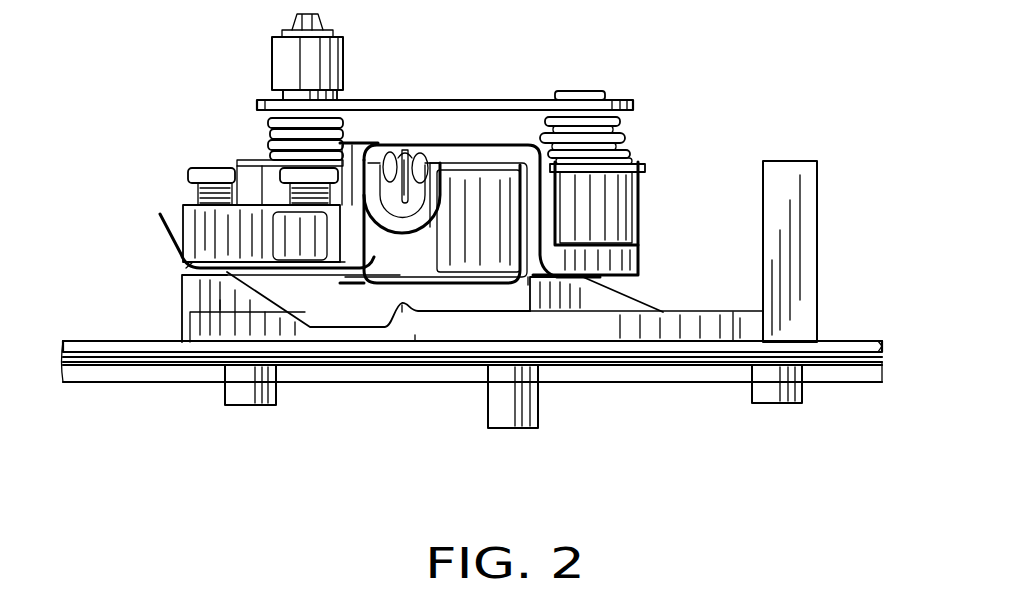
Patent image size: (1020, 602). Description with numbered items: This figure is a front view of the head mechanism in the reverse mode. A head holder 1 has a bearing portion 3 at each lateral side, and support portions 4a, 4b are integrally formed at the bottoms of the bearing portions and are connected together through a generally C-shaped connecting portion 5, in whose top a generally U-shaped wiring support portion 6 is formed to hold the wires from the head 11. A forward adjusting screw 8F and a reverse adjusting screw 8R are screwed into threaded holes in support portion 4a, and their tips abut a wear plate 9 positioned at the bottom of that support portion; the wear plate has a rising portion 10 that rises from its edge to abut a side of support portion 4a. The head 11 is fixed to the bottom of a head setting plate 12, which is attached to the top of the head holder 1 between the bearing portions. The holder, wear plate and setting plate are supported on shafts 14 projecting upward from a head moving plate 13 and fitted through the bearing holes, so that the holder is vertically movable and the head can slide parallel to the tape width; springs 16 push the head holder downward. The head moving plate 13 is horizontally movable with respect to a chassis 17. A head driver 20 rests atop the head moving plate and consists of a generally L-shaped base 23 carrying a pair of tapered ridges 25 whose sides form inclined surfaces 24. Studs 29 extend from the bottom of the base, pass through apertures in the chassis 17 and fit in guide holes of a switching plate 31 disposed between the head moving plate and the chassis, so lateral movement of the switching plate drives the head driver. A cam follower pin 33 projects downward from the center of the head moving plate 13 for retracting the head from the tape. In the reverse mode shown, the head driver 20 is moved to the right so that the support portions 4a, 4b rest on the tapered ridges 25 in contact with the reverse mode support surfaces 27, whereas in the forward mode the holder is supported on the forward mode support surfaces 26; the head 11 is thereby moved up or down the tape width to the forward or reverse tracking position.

The head holder 1 is at (475, 150).
The bearing portion 3 is at (266, 187).
The support portion 4a is at (181, 216).
The support portion 4b is at (628, 256).
The connecting portion 5 is at (437, 145).
The wiring support portion 6 is at (410, 202).
The forward adjusting screw 8F is at (198, 194).
The reverse adjusting screw 8R is at (347, 150).
The wear plate 9 is at (182, 262).
The rising portion 10 is at (172, 225).
The head 11 is at (464, 199).
The head setting plate 12 is at (641, 168).
The head moving plate 13 is at (846, 345).
The shaft 14 is at (282, 99).
The spring 16 is at (268, 128).
The chassis 17 is at (838, 375).
The head driver 20 is at (808, 245).
The base 23 is at (422, 333).
The inclined surface 24 is at (277, 290).
The tapered ridge 25 is at (187, 297).
The forward mode support surface 26 is at (400, 330).
The reverse mode support surface 27 is at (220, 300).
The stud 29 is at (255, 395).
The switching plate 31 is at (868, 360).
The cam follower pin 33 is at (517, 412).